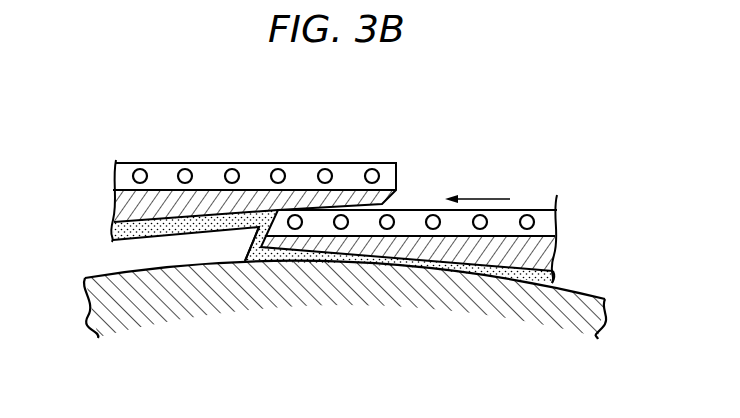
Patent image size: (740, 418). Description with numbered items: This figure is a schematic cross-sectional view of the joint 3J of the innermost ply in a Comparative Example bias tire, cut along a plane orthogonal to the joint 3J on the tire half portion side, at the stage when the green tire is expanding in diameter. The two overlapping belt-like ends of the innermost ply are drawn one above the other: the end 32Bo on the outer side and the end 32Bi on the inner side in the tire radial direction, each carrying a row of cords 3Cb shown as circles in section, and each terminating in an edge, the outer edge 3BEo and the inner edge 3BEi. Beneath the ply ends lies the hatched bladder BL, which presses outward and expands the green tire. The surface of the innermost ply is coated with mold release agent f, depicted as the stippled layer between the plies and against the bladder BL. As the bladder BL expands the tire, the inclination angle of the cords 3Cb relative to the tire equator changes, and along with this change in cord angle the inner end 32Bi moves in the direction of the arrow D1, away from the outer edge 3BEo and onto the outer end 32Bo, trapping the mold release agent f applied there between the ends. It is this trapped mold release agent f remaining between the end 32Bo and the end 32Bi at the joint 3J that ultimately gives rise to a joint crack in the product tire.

The end on the outer side 32Bo is at (207, 177).
The end on the inner side 32Bi is at (368, 225).
The cord 3Cb is at (325, 170).
The outer belt end 3BEo is at (397, 178).
The inner belt end 3BEi is at (253, 227).
The joint 3J is at (421, 116).
The mold release agent f is at (150, 236).
The bladder BL is at (318, 338).
The arrow D1 is at (495, 195).